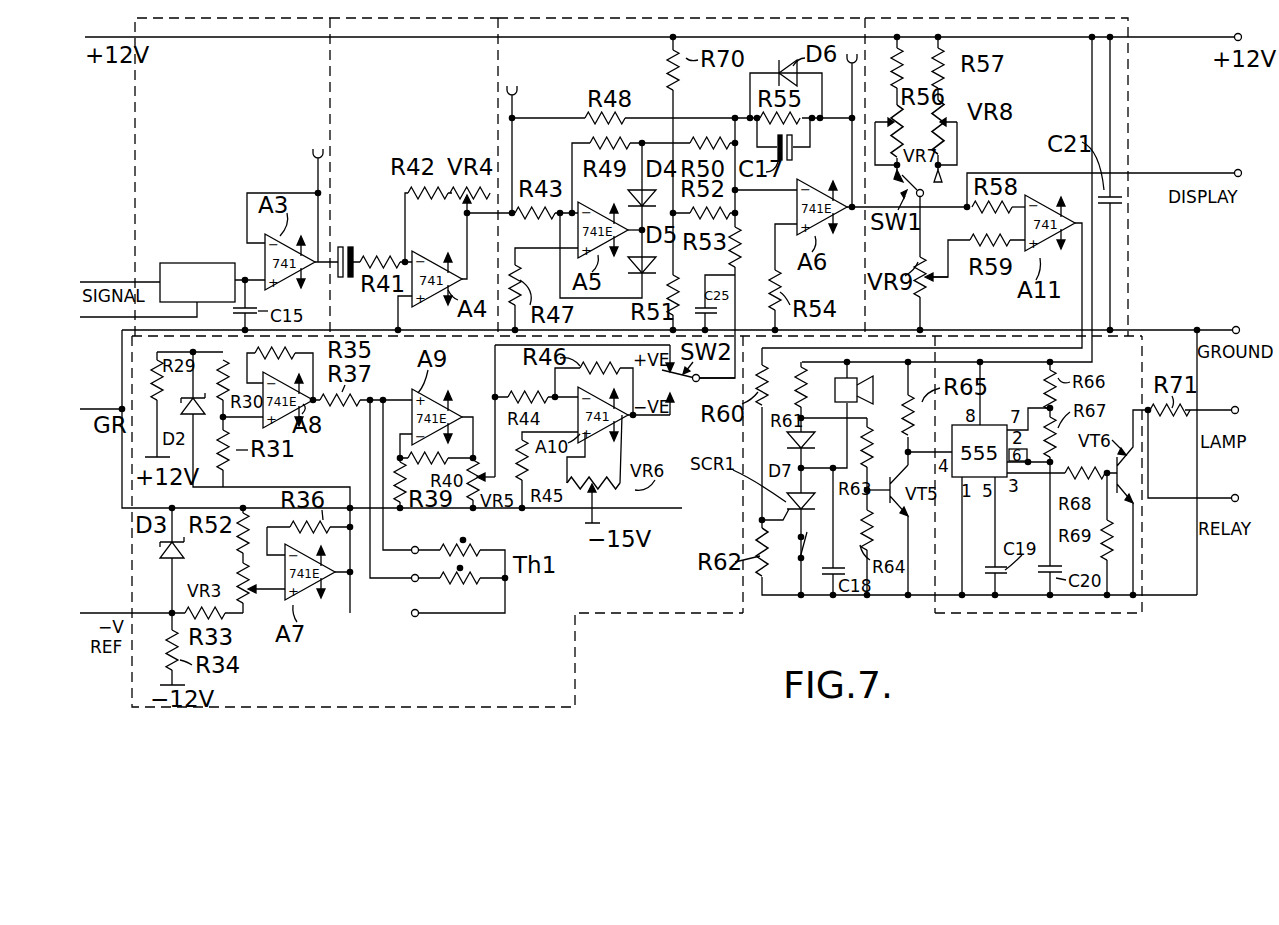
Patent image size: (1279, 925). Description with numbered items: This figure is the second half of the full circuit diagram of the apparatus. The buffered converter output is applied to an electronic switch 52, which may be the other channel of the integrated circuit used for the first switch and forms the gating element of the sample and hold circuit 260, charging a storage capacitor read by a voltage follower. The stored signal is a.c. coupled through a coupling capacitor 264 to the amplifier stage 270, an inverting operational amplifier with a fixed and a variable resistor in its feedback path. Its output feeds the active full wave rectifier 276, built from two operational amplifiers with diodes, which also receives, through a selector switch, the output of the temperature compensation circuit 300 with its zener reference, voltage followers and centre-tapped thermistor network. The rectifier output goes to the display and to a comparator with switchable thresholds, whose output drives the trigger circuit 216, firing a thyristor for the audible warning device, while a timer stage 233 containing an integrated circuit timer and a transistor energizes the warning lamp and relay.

The electronic switch 52 is at (191, 262).
The sample and hold circuit 260 is at (147, 135).
The coupling capacitor 264 is at (347, 245).
The amplifier stage 270 is at (337, 93).
The full wave rectifier 276 is at (500, 74).
The temperature compensation circuit 300 is at (560, 653).
The trigger circuit 216 is at (768, 610).
The timer output circuit 233 is at (1002, 610).